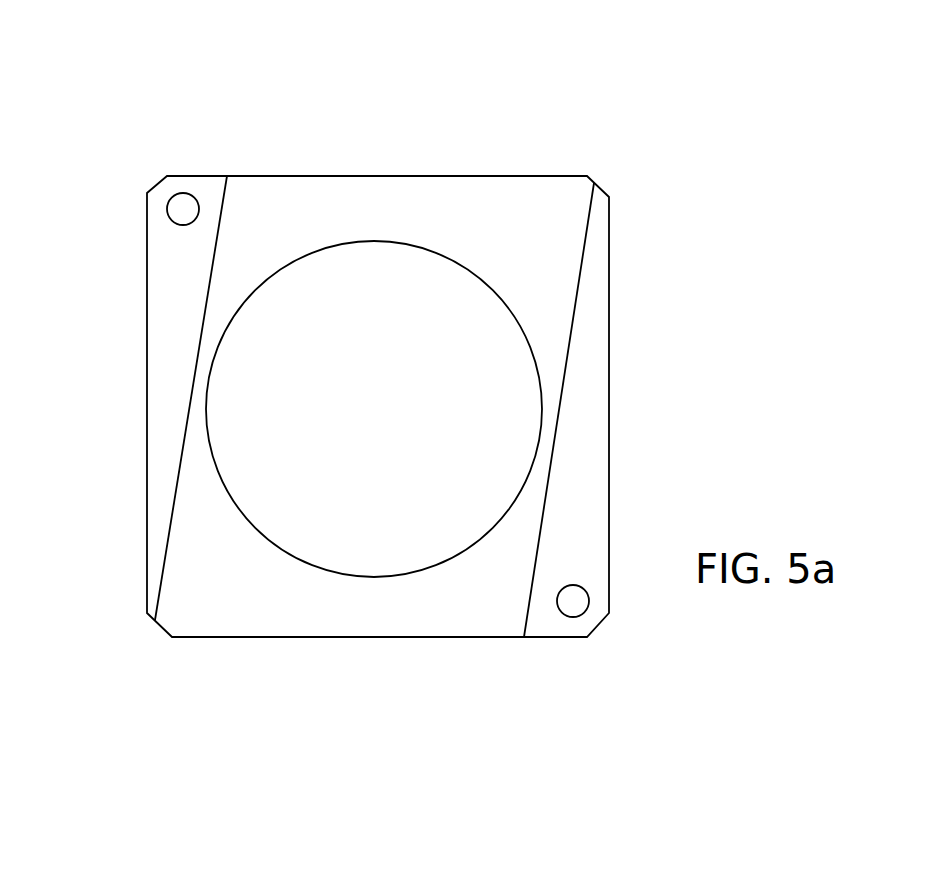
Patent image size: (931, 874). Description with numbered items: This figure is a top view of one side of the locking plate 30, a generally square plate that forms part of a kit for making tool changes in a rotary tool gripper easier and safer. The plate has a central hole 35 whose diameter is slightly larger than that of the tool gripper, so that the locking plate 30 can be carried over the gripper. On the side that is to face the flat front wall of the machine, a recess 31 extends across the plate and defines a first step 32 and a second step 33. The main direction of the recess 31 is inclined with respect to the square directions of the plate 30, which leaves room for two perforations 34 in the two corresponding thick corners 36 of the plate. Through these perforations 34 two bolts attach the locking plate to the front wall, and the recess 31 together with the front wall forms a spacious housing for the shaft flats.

The locking plate 30 is at (697, 178).
The recess 31 is at (407, 613).
The first step 32 is at (577, 294).
The second step 33 is at (173, 512).
The perforations 34 is at (573, 602).
The central hole 35 is at (373, 390).
The thick corners 36 is at (168, 192).